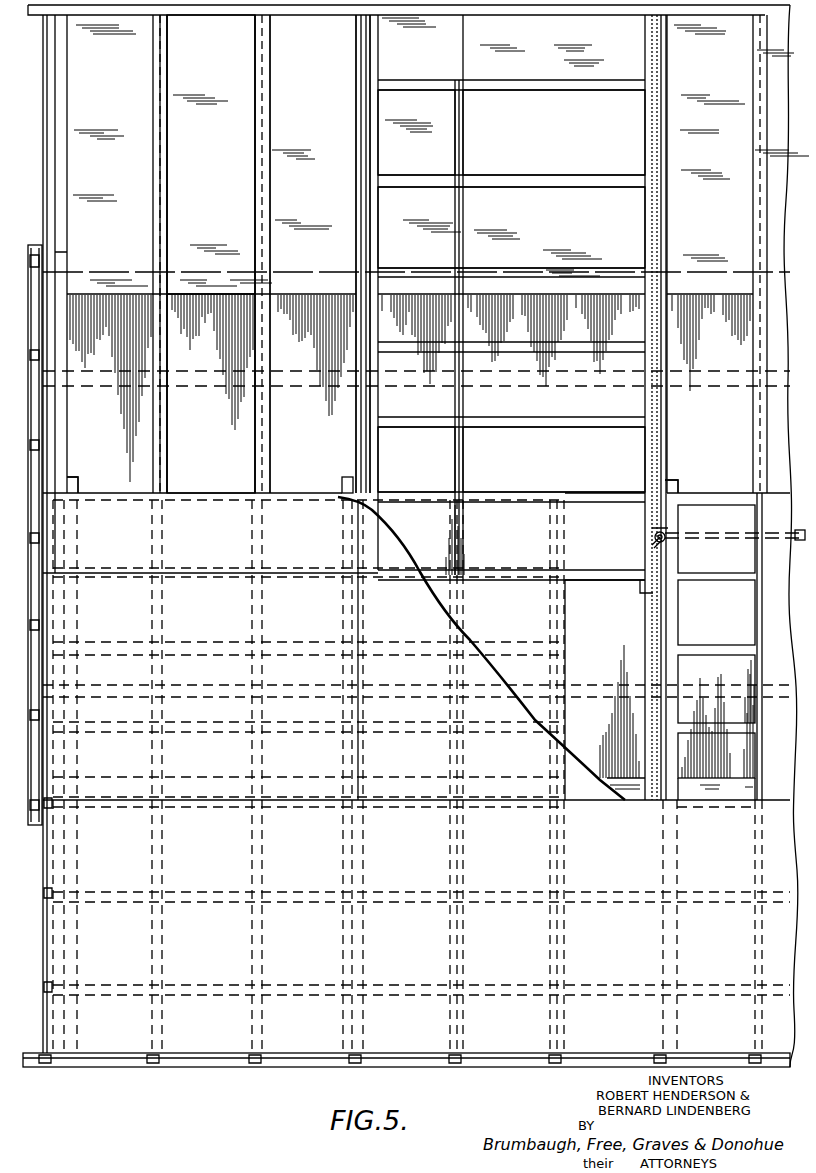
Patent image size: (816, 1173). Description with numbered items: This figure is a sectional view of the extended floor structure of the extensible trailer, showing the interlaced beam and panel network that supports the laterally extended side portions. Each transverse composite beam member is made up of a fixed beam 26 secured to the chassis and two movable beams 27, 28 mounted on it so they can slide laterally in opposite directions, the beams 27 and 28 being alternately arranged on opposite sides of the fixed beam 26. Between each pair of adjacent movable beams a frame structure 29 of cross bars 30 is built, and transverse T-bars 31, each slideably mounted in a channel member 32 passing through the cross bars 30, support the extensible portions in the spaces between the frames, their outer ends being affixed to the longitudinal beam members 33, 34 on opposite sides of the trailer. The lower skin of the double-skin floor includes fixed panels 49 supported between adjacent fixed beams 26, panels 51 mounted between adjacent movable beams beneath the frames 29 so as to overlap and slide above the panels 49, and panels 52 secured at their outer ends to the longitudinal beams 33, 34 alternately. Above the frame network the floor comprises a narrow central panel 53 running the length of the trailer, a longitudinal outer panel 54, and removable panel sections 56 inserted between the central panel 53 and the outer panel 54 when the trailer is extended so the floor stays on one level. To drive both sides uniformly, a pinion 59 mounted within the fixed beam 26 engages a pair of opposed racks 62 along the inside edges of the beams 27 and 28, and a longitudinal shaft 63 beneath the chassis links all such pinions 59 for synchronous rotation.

The fixed beam 26 is at (356, 436).
The movable beam 27 is at (345, 488).
The movable beam 28 is at (378, 458).
The frame structure 29 is at (100, 493).
The cross bar 30 is at (615, 88).
The transverse T-bar 31 is at (250, 58).
The channel member 32 is at (465, 134).
The longitudinal beam member 33 is at (207, 1055).
The longitudinal beam member 34 is at (316, 18).
The fixed panel 49 is at (221, 444).
The panel 51 is at (518, 226).
The panel 52 is at (222, 224).
The central panel 53 is at (403, 540).
The outer panel 54 is at (412, 942).
The removable panel section 56 is at (221, 629).
The pinion 59 is at (650, 552).
The rack 62 is at (652, 400).
The longitudinal shaft 63 is at (705, 533).